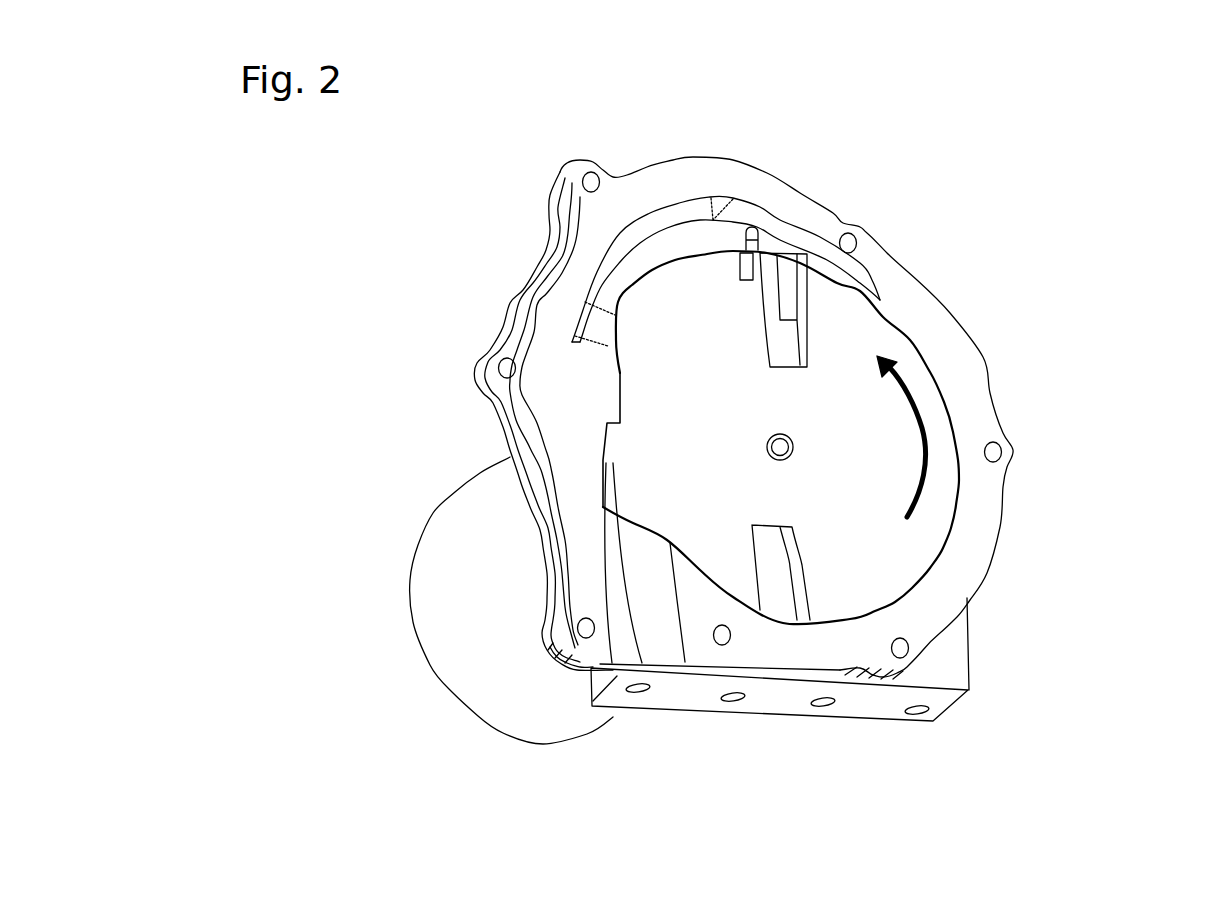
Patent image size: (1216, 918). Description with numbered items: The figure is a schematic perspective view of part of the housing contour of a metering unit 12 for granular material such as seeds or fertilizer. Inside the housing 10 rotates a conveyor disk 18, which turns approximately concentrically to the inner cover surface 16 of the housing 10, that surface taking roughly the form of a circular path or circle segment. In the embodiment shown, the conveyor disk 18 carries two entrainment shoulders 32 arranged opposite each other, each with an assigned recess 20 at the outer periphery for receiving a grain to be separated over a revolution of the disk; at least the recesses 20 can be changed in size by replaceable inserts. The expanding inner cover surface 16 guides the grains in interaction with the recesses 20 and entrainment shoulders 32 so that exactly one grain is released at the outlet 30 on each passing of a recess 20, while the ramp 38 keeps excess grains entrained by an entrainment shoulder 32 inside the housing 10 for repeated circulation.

The housing 10 is at (795, 655).
The metering unit 12 is at (1062, 282).
The inner cover surface 16 is at (614, 277).
The conveyor disk 18 is at (716, 460).
The recess 20 is at (740, 268).
The outlet 30 is at (625, 660).
The entrainment shoulder 32 is at (765, 311).
The ramp 38 is at (588, 321).